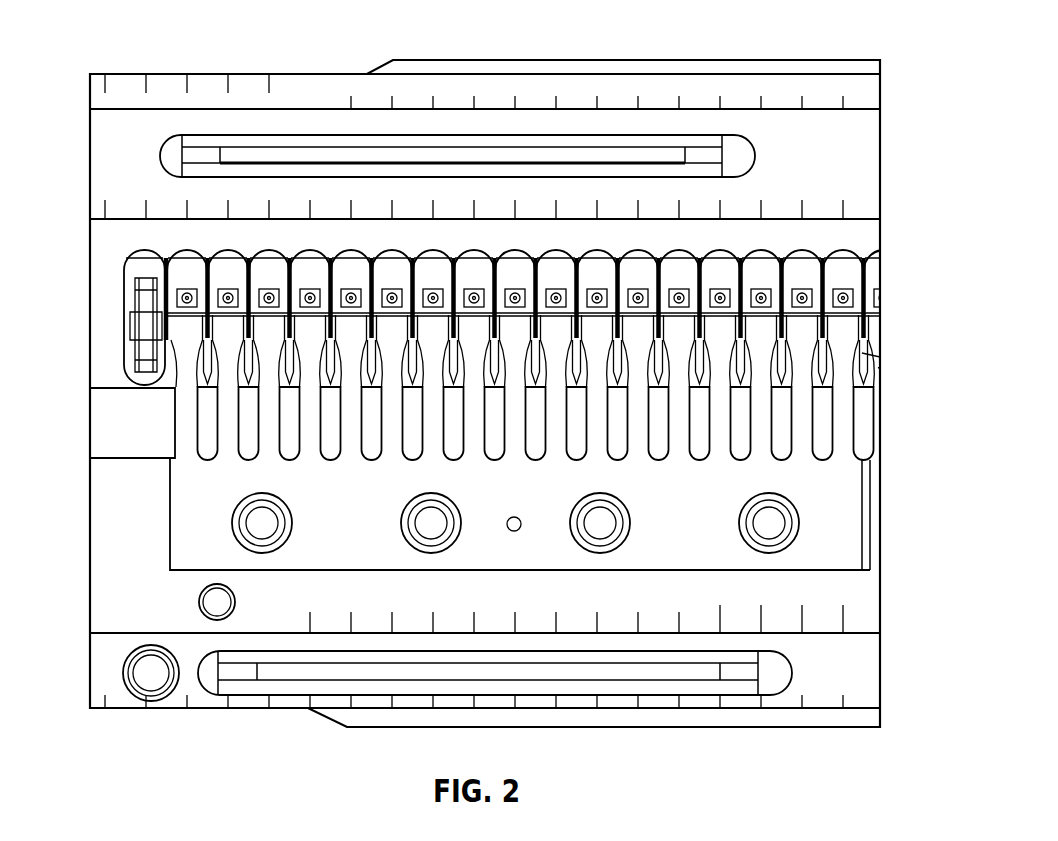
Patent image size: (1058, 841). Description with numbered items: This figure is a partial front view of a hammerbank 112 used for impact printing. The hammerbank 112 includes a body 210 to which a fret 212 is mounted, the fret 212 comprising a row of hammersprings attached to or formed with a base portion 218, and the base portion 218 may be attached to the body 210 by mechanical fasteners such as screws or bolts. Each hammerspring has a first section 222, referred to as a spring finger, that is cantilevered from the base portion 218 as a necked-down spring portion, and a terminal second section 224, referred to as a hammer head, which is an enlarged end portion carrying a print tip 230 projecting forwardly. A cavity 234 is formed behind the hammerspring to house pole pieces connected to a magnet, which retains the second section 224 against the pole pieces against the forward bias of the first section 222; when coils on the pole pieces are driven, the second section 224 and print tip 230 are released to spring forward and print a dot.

The hammerbank 112 is at (243, 80).
The body 210 is at (822, 82).
The cavity 234 is at (467, 314).
The print tip 230 is at (181, 298).
The second section 224 is at (187, 332).
The first section 222 is at (187, 398).
The fret 212 is at (187, 523).
The base portion 218 is at (837, 537).